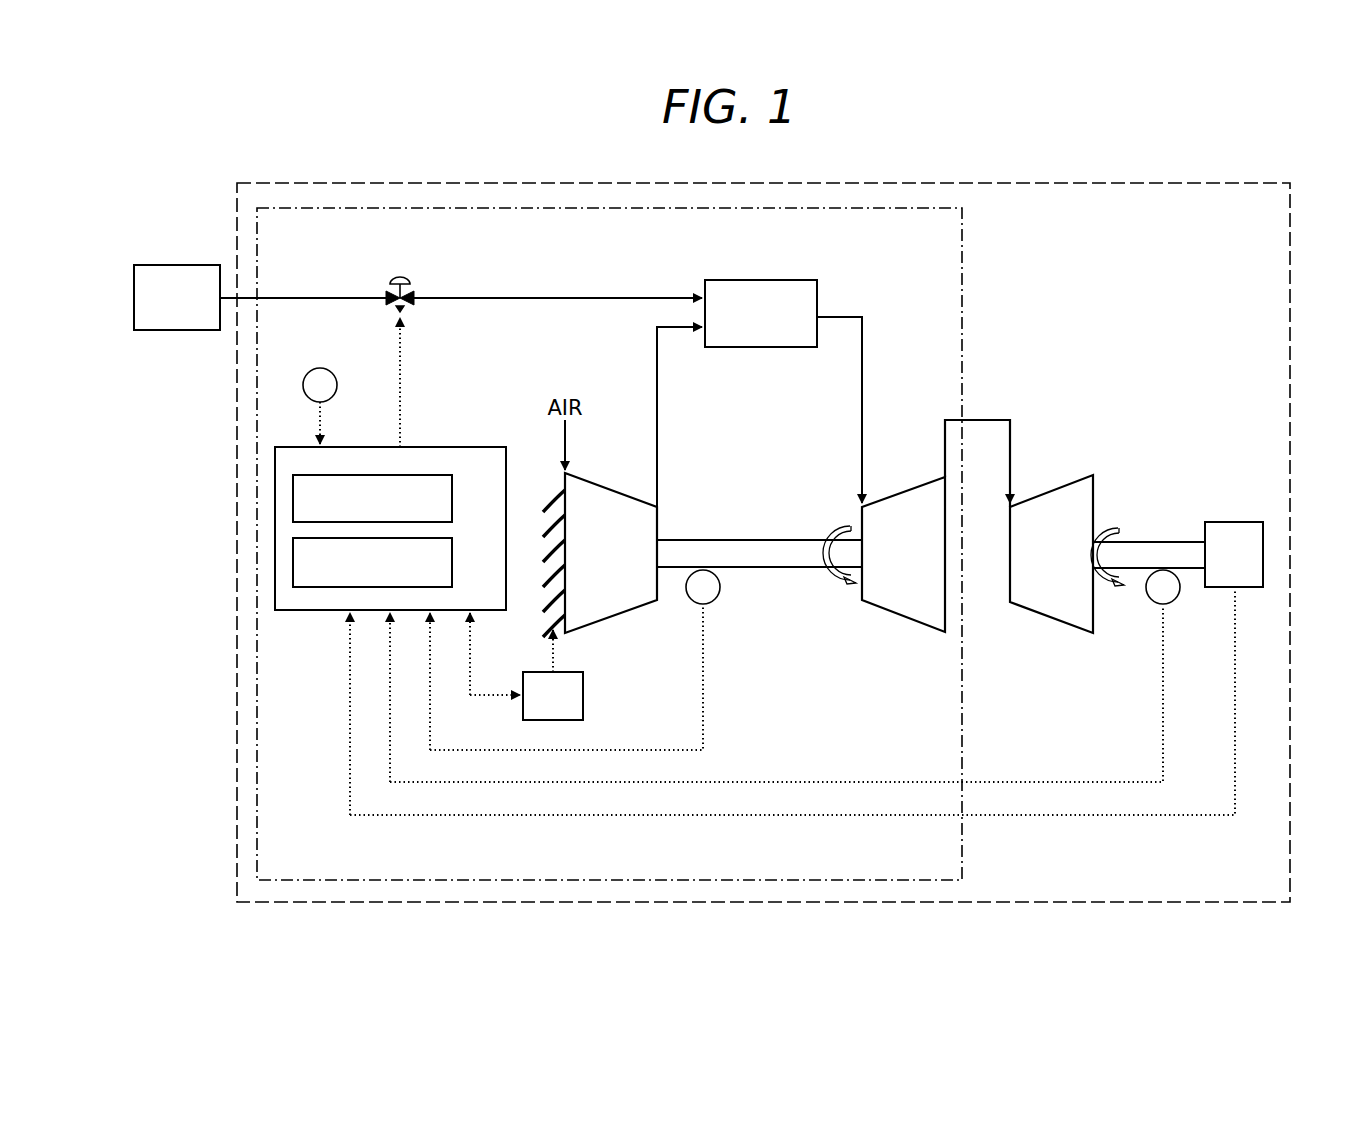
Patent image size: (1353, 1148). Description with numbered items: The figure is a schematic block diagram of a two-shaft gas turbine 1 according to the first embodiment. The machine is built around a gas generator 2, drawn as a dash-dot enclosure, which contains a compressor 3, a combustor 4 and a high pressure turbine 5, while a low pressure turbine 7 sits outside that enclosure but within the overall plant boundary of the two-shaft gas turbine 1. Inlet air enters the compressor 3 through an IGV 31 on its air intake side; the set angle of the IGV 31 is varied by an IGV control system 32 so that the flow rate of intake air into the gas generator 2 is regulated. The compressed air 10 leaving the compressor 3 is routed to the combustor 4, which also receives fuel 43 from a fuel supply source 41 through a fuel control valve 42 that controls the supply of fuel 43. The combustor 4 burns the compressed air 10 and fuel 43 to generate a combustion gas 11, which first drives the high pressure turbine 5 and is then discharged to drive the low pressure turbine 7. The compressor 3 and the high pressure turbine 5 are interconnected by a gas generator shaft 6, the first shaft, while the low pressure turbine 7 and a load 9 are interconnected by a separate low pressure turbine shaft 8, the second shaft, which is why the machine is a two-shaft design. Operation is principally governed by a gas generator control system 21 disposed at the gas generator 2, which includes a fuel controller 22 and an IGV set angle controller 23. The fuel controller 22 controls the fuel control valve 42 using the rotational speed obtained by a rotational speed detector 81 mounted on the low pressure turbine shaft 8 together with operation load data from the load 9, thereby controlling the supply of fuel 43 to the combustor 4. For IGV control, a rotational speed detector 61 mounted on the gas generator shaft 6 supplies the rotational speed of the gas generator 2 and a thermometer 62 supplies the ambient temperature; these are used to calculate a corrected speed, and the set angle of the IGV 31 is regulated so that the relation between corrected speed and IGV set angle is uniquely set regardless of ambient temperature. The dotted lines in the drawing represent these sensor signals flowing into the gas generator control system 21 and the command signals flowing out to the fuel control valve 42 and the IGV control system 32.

The two-shaft gas turbine 1 is at (1125, 183).
The gas generator 2 is at (962, 245).
The compressor 3 is at (602, 488).
The combustor 4 is at (760, 280).
The high pressure turbine 5 is at (897, 490).
The gas generator shaft 6 is at (766, 538).
The low pressure turbine 7 is at (1045, 490).
The low pressure turbine shaft 8 is at (1155, 540).
The load 9 is at (1230, 522).
The compressed air 10 is at (660, 388).
The combustion gas 11 is at (865, 388).
The gas generator control system 21 is at (755, 616).
The fuel controller 22 is at (452, 500).
The IGV set angle controller 23 is at (452, 562).
The IGV (inlet guide vane) 31 is at (553, 494).
The IGV control system 32 is at (583, 692).
The fuel supply source 41 is at (165, 265).
The fuel control valve 42 is at (406, 282).
The fuel 43 is at (600, 298).
The rotational speed detector 61 is at (716, 598).
The thermometer 62 is at (333, 372).
The rotational speed detector 81 is at (1176, 598).